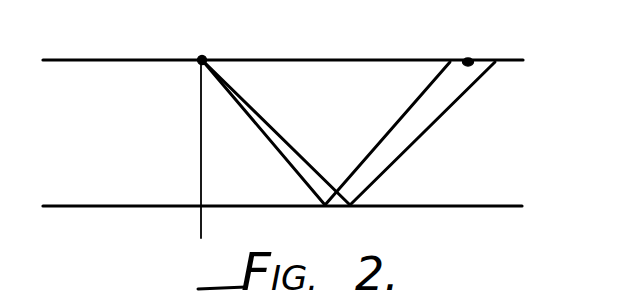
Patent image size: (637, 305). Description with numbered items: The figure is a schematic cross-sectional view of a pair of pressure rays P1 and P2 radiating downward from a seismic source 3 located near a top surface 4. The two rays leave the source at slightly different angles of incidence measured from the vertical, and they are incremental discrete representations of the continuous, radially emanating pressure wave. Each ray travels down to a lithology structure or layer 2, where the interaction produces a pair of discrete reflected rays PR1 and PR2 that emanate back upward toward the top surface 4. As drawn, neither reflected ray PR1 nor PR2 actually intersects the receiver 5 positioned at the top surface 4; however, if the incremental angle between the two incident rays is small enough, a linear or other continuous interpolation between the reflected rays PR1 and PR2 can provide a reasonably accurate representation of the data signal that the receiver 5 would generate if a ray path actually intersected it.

The lithology structure or layer 2 is at (481, 207).
The seismic source 3 is at (202, 59).
The top surface 4 is at (95, 52).
The receiver 5 is at (468, 60).
The pressure ray P1 is at (294, 171).
The pressure ray P2 is at (264, 122).
The reflected ray PR1 is at (440, 118).
The reflected ray PR2 is at (417, 100).